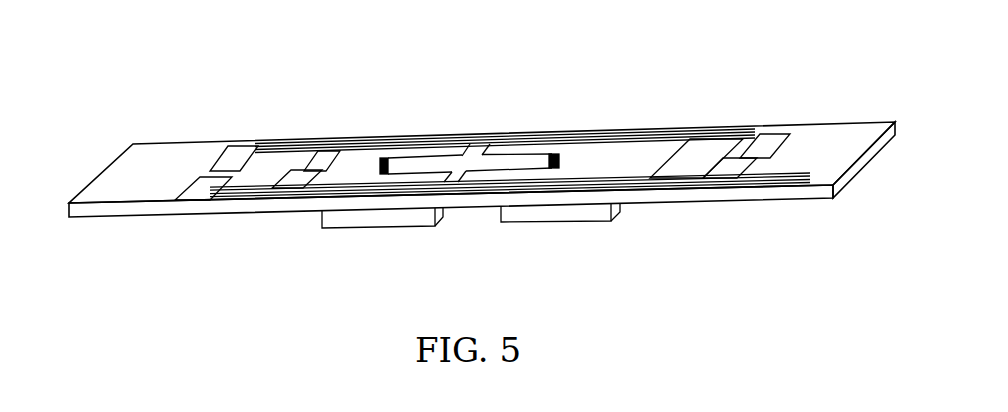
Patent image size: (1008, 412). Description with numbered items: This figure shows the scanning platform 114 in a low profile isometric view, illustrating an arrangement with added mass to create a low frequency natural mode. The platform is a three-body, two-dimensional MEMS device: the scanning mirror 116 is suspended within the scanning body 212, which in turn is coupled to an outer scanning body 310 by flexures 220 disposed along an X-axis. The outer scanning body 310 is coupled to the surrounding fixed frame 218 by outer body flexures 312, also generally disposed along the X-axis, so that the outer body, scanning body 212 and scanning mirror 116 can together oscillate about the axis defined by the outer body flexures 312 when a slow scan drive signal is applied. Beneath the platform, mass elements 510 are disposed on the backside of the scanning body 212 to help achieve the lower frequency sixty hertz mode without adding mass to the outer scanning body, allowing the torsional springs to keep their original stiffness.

The scanning platform 114 is at (482, 114).
The scanning mirror 116 is at (468, 153).
The scanning body 212 is at (352, 151).
The fixed frame 218 is at (177, 158).
The flexures 220 is at (308, 170).
The outer scanning body 310 is at (275, 157).
The outer body flexures 312 is at (225, 176).
The support blocks 510 is at (412, 228).